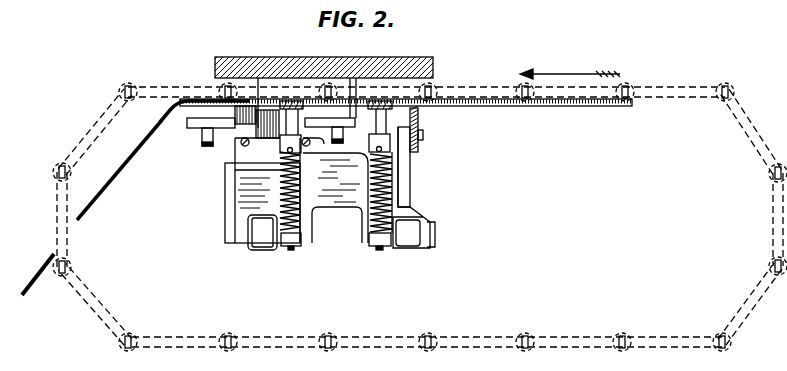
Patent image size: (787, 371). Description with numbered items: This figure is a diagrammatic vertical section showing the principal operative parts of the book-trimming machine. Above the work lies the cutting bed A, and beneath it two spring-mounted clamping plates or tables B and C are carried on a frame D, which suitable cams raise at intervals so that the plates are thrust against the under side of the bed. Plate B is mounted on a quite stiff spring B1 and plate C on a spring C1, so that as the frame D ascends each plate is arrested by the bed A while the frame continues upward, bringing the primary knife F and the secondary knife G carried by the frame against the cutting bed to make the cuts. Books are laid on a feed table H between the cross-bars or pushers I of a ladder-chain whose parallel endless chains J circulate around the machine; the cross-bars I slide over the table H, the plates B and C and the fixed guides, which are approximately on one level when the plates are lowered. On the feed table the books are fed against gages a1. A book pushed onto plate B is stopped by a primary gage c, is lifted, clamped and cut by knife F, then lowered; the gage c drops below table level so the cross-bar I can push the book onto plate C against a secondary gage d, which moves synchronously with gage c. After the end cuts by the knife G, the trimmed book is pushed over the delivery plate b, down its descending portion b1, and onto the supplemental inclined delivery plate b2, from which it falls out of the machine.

The cutting bed A is at (250, 52).
The clamping plate B is at (382, 115).
The spring B1 is at (390, 185).
The clamping plate C is at (292, 102).
The spring C1 is at (287, 190).
The frame D is at (335, 187).
The knife F is at (420, 131).
The knife G is at (263, 124).
The feed table H is at (502, 107).
The cross-bar I is at (135, 88).
The endless chain J is at (420, 209).
The gage a1 is at (330, 122).
The delivery plate b is at (182, 99).
The descending portion of delivery plate b1 is at (119, 170).
The supplemental inclined delivery plate b2 is at (35, 274).
The primary gage c is at (361, 98).
The secondary gage d is at (257, 108).